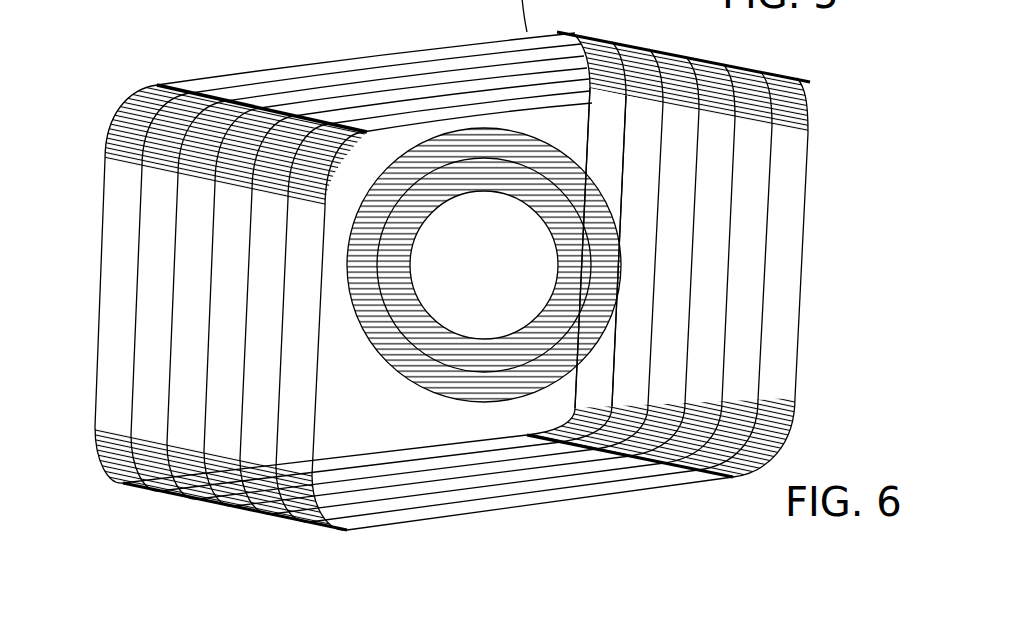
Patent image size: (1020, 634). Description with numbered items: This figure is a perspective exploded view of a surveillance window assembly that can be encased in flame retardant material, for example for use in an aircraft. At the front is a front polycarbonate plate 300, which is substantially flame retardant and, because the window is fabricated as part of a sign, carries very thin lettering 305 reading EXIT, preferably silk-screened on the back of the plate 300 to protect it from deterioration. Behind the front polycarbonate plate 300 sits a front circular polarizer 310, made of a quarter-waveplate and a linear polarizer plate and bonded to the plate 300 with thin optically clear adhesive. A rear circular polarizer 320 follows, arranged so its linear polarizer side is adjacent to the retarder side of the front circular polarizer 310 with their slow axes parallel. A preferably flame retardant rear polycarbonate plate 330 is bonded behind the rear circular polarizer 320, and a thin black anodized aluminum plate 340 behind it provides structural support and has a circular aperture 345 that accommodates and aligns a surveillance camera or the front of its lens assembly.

The front polycarbonate plate 300 is at (567, 503).
The lettering 305 is at (683, 318).
The front circular polarizer 310 is at (613, 487).
The rear circular polarizer 320 is at (643, 467).
The rear polycarbonate plate 330 is at (572, 36).
The aluminum plate 340 is at (550, 32).
The aperture 345 is at (517, 130).